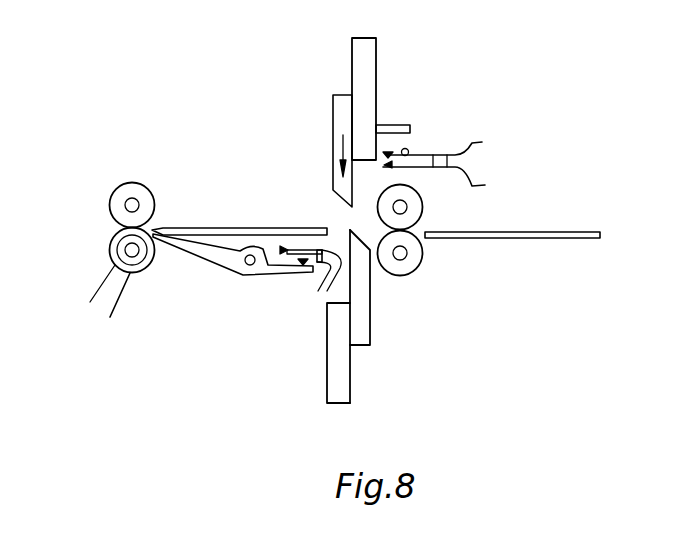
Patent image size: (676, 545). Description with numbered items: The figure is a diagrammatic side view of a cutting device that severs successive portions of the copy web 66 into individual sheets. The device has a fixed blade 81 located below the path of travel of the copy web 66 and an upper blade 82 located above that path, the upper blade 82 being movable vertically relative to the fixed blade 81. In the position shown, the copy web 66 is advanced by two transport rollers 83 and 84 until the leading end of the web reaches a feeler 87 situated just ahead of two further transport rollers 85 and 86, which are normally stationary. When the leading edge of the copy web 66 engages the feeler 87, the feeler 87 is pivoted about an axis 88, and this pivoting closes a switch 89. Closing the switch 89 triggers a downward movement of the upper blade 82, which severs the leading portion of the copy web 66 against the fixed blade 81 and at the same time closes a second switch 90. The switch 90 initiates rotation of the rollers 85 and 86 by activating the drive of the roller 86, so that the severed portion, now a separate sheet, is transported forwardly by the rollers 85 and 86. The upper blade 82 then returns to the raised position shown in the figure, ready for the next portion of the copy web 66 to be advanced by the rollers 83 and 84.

The copy web 66 is at (507, 238).
The fixed blade 81 is at (360, 310).
The upper blade 82 is at (342, 112).
The transport roller 83 is at (415, 212).
The transport roller 84 is at (413, 260).
The transport roller 85 is at (135, 190).
The transport roller 86 is at (118, 249).
The feeler 87 is at (210, 252).
The axis 88 is at (250, 265).
The switch 89 is at (286, 262).
The switch 90 is at (400, 162).